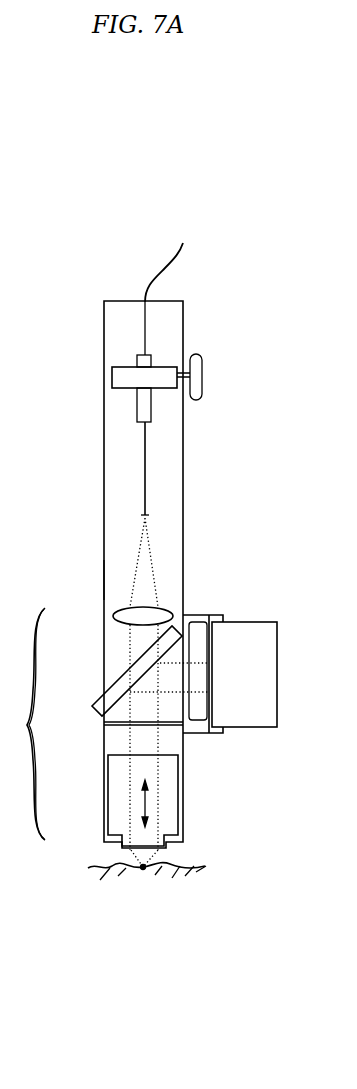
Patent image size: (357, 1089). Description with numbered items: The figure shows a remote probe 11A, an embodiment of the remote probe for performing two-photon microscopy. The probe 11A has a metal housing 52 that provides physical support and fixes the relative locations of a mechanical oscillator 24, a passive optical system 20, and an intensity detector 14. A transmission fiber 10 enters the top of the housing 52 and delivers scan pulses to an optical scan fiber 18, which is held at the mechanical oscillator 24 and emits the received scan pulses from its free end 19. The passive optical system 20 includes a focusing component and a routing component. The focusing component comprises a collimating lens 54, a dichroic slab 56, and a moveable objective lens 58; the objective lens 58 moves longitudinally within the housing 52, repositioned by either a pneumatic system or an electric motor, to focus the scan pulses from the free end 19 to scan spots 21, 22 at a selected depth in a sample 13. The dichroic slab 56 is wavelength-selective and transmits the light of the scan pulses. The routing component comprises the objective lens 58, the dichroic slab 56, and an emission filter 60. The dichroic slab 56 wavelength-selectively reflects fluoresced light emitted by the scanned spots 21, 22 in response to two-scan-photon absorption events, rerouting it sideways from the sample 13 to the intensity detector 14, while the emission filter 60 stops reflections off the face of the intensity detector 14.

The transmission fiber 10 is at (155, 284).
The remote probe 11A is at (58, 448).
The mechanical oscillator 24 is at (142, 425).
The optical scan fiber 18 is at (146, 462).
The free end 19 is at (146, 516).
The metal housing 52 is at (104, 574).
The collimating lens 54 is at (172, 608).
The dichroic slab 56 is at (92, 712).
The moveable objective lens 58 is at (108, 810).
The emission filter 60 is at (200, 617).
The intensity detector 14 is at (253, 688).
The passive optical system 20 is at (22, 724).
The sample 13 is at (104, 870).
The scan spot 21 is at (143, 870).
The scan spot 22 is at (178, 870).